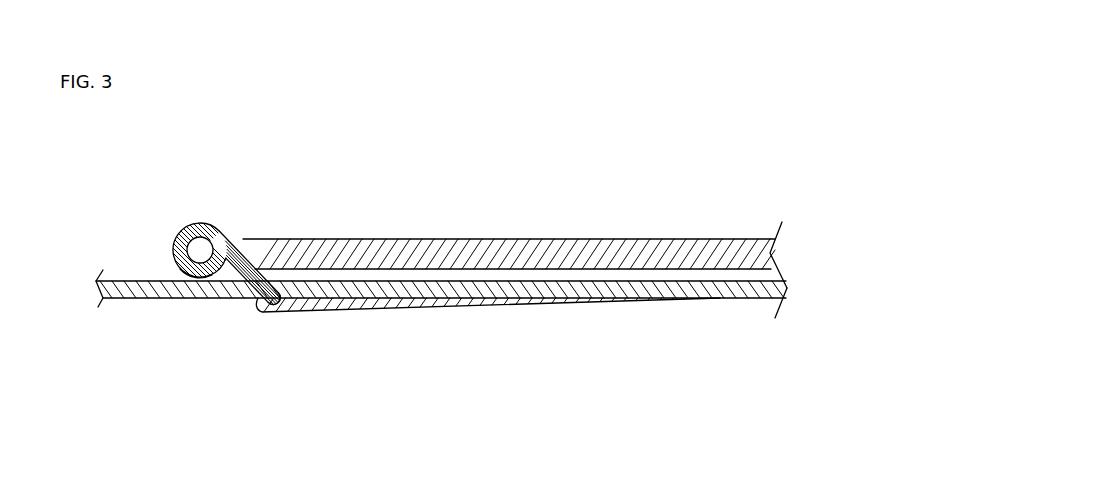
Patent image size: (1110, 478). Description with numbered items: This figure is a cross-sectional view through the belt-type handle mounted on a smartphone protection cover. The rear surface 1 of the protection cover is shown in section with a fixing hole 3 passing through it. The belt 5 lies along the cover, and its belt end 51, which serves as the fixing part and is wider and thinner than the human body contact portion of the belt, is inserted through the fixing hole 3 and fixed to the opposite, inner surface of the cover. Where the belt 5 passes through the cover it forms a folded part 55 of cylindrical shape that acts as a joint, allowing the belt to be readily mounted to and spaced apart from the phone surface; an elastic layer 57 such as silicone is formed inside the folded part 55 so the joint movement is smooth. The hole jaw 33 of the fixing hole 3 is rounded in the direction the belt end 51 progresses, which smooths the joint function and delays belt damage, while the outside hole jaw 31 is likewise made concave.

The rear surface of the protection cover 1 is at (142, 281).
The fixing hole 3 is at (255, 282).
The belt 5 is at (488, 250).
The outside hole jaw 31 is at (221, 298).
The hole jaw 33 is at (264, 306).
The belt end 51 is at (404, 306).
The folded part 55 is at (200, 223).
The elastic layer 57 is at (250, 240).